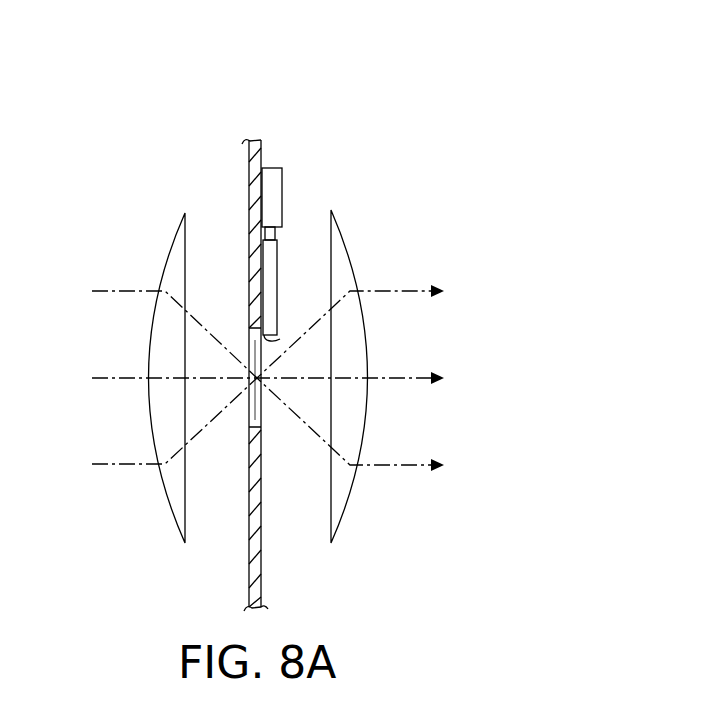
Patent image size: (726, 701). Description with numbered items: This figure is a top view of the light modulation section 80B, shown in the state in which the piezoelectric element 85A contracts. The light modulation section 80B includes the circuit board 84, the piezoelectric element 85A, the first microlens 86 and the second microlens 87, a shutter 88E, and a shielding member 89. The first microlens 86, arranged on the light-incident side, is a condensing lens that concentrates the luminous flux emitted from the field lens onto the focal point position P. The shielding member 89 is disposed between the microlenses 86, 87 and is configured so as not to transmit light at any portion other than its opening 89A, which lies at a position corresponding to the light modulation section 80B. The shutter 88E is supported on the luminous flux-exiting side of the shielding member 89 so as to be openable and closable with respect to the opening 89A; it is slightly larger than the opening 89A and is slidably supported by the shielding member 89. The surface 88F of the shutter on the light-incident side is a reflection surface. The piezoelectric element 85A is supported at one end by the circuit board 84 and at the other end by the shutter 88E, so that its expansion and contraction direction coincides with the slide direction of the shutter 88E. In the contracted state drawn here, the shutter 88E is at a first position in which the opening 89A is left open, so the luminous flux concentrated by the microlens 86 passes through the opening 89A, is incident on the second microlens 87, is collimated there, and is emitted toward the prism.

The light modulation section 80B is at (159, 127).
The circuit board 84 is at (273, 180).
The piezoelectric element 85A is at (272, 233).
The first microlens 86 is at (174, 515).
The second microlens 87 is at (353, 518).
The shutter 88E is at (272, 247).
The surface 88F is at (280, 339).
The shielding member 89 is at (260, 570).
The opening 89A is at (255, 413).
The focal point position P is at (251, 356).